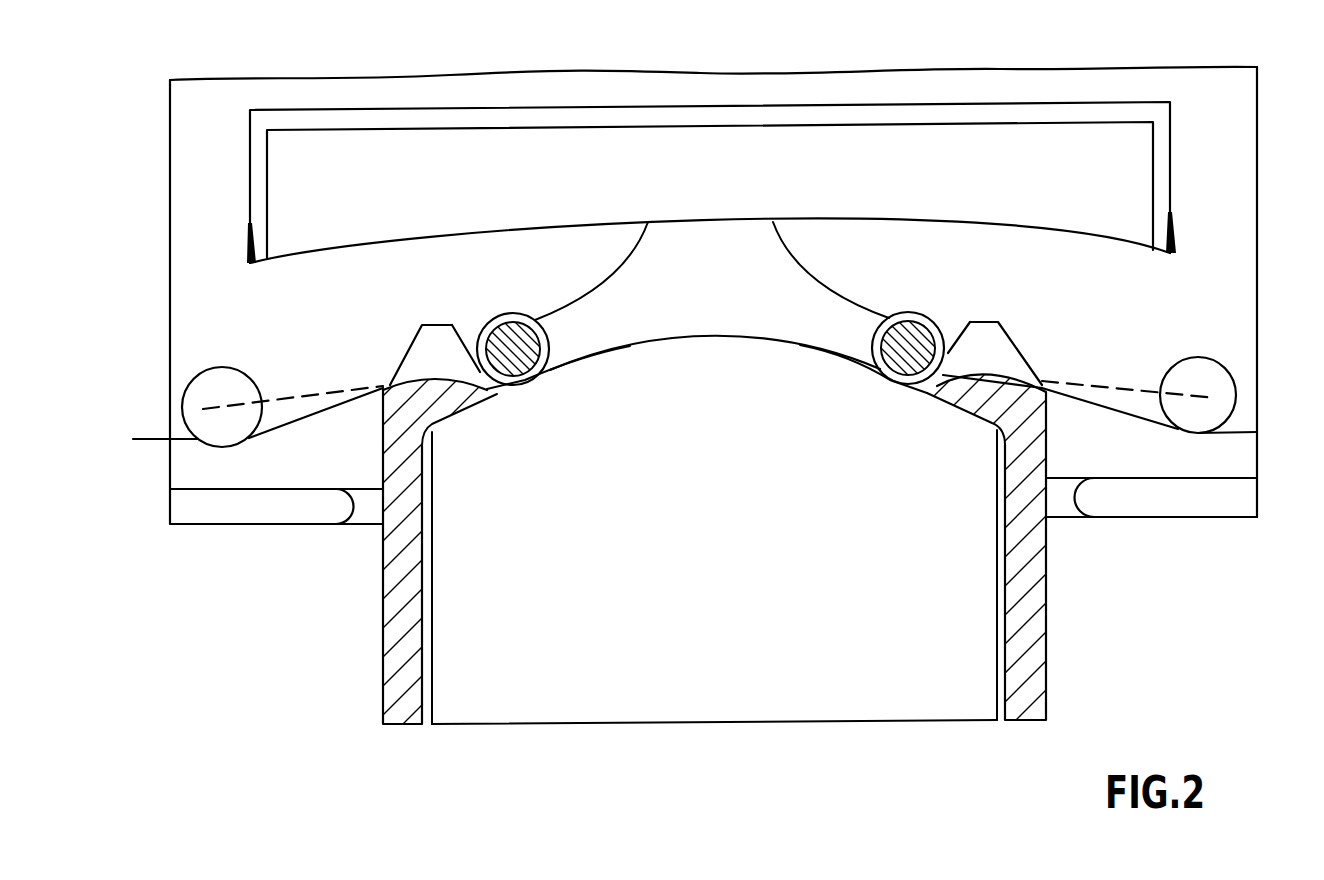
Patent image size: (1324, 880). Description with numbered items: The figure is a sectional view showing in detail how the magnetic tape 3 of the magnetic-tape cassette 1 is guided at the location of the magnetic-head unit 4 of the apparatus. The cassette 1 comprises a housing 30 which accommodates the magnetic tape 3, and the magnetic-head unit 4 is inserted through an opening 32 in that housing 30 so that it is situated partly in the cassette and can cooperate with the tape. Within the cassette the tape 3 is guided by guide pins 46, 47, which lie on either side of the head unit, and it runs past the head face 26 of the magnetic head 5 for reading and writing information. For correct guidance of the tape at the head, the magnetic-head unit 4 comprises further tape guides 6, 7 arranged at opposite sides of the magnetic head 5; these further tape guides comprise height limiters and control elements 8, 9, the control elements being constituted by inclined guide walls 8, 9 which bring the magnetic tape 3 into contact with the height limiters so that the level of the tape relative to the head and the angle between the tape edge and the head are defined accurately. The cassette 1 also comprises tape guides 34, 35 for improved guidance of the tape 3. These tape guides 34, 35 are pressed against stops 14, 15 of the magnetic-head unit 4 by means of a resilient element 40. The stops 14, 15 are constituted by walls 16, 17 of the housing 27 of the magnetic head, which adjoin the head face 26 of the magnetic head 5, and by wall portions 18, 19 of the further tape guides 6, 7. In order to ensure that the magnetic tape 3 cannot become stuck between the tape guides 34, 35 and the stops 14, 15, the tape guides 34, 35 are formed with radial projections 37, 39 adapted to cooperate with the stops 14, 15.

The magnetic-tape cassette 1 is at (1258, 107).
The magnetic tape 3 is at (148, 438).
The magnetic-head unit 4 is at (812, 724).
The magnetic head 5 is at (738, 365).
The further tape guide 6 is at (382, 428).
The further tape guide 7 is at (1027, 407).
The control element 8 is at (428, 352).
The control element 9 is at (990, 322).
The stop 14 is at (507, 403).
The stop 15 is at (923, 400).
The wall 16 is at (513, 397).
The wall 17 is at (890, 383).
The wall portion 18 is at (460, 335).
The wall portion 19 is at (957, 330).
The head face 26 is at (668, 338).
The housing of the magnetic head 27 is at (957, 697).
The housing 30 is at (1185, 502).
The opening 32 is at (1058, 502).
The tape guide 34 is at (512, 345).
The tape guide 35 is at (905, 342).
The radial projection 37 is at (547, 342).
The radial projection 39 is at (876, 330).
The resilient element 40 is at (400, 238).
The guide pin 46 is at (218, 390).
The guide pin 47 is at (1208, 375).